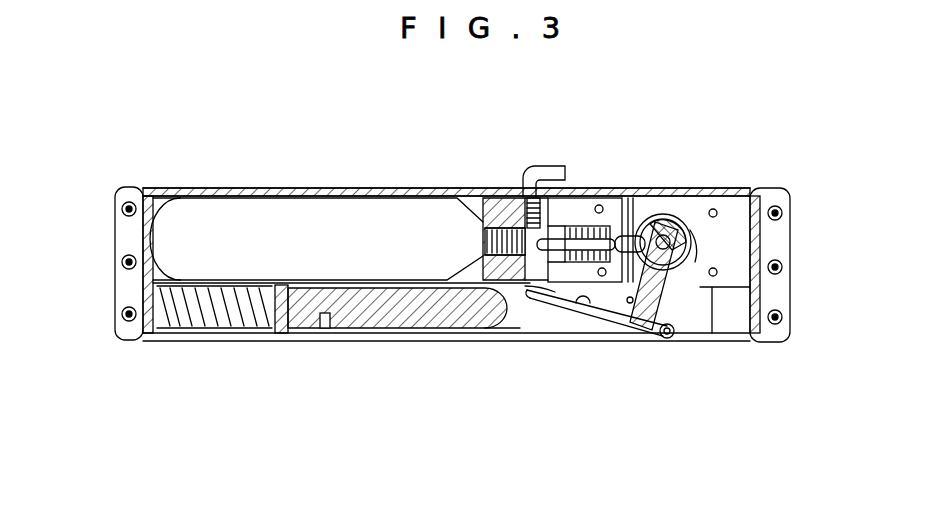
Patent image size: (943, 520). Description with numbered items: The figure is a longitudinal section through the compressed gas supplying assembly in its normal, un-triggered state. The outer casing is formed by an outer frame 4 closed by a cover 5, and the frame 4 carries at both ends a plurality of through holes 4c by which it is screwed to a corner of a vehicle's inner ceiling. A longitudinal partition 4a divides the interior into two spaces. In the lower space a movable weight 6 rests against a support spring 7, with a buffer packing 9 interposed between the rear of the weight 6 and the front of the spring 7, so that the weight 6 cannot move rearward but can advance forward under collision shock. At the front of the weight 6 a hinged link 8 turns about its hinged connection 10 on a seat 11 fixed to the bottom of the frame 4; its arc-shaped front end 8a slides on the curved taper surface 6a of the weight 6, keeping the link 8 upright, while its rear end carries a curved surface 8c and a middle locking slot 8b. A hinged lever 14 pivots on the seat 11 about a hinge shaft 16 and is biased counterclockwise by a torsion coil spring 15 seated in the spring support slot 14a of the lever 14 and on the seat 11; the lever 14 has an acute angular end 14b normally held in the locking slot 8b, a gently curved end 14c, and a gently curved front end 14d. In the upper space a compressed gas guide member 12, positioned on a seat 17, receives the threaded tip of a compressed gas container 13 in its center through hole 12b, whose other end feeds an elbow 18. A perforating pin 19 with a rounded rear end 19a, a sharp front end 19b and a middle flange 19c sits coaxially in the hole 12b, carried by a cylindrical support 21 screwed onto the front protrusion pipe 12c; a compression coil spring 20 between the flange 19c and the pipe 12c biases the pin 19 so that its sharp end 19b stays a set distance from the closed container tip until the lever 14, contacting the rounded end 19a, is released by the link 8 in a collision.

The outer frame 4 is at (393, 343).
The longitudinal partition 4a is at (310, 330).
The through holes 4c is at (118, 218).
The cover 5 is at (238, 190).
The movable weight 6 is at (355, 320).
The curved taper surface 6a is at (440, 388).
The support spring 7 is at (205, 320).
The hinged link 8 is at (603, 320).
The arc-shaped front end 8a is at (527, 292).
The locking slot 8b is at (583, 305).
The curved surface 8c is at (700, 305).
The buffer packing 9 is at (275, 310).
The hinged connection 10 is at (690, 345).
The seat 11 is at (765, 343).
The compressed gas guide member 12 is at (420, 141).
The center through hole 12b is at (465, 146).
The front protrusion pipe 12c is at (553, 195).
The compressed gas container 13 is at (273, 223).
The hinged lever 14 is at (675, 300).
The spring support slot 14a is at (662, 342).
The acute angular end 14b is at (645, 345).
The gently curved end 14c is at (625, 325).
The gently curved front end 14d is at (662, 220).
The torsion coil spring 15 is at (705, 245).
The hinge shaft 16 is at (675, 238).
The seat 17 is at (570, 198).
The elbow 18 is at (513, 93).
The perforating pin 19 is at (612, 232).
The rounded rear end 19a is at (652, 235).
The sharp front end 19b is at (540, 225).
The middle flange 19c is at (607, 238).
The compression coil spring 20 is at (592, 236).
The cylindrical support 21 is at (560, 300).